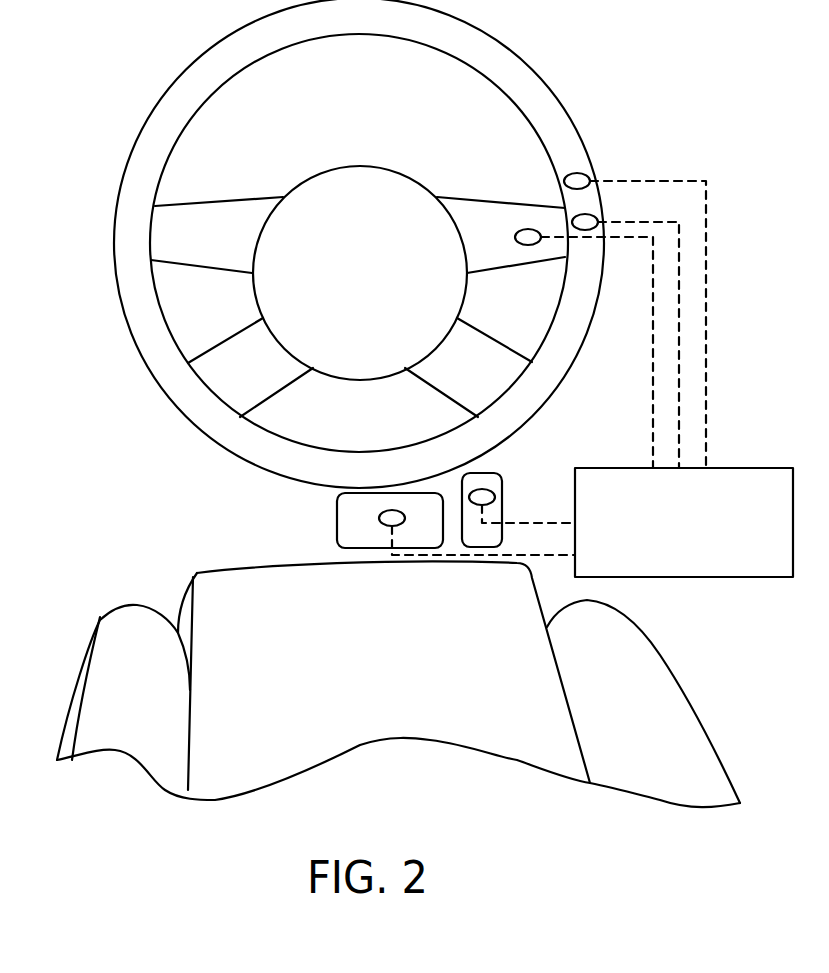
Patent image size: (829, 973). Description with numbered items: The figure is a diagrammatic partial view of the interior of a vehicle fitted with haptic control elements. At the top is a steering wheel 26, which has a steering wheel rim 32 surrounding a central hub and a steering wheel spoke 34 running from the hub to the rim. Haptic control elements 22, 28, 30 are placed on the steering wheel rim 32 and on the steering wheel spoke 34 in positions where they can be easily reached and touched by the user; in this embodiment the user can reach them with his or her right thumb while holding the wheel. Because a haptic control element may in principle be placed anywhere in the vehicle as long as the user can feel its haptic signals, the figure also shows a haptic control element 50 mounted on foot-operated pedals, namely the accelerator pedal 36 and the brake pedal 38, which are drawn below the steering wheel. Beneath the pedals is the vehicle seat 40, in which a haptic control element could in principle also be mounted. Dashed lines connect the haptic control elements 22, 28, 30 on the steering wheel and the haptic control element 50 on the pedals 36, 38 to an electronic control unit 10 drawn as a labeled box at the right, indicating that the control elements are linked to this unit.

The electronic control unit 10 is at (643, 570).
The haptic control element 22 is at (580, 180).
The steering wheel 26 is at (397, 244).
The haptic control element 28 is at (588, 222).
The haptic control element 30 is at (532, 237).
The steering wheel rim 32 is at (152, 146).
The steering wheel spoke 34 is at (485, 208).
The accelerator pedal 36 is at (480, 480).
The brake pedal 38 is at (347, 533).
The vehicle seat 40 is at (227, 580).
The haptic control element 50 is at (392, 518).